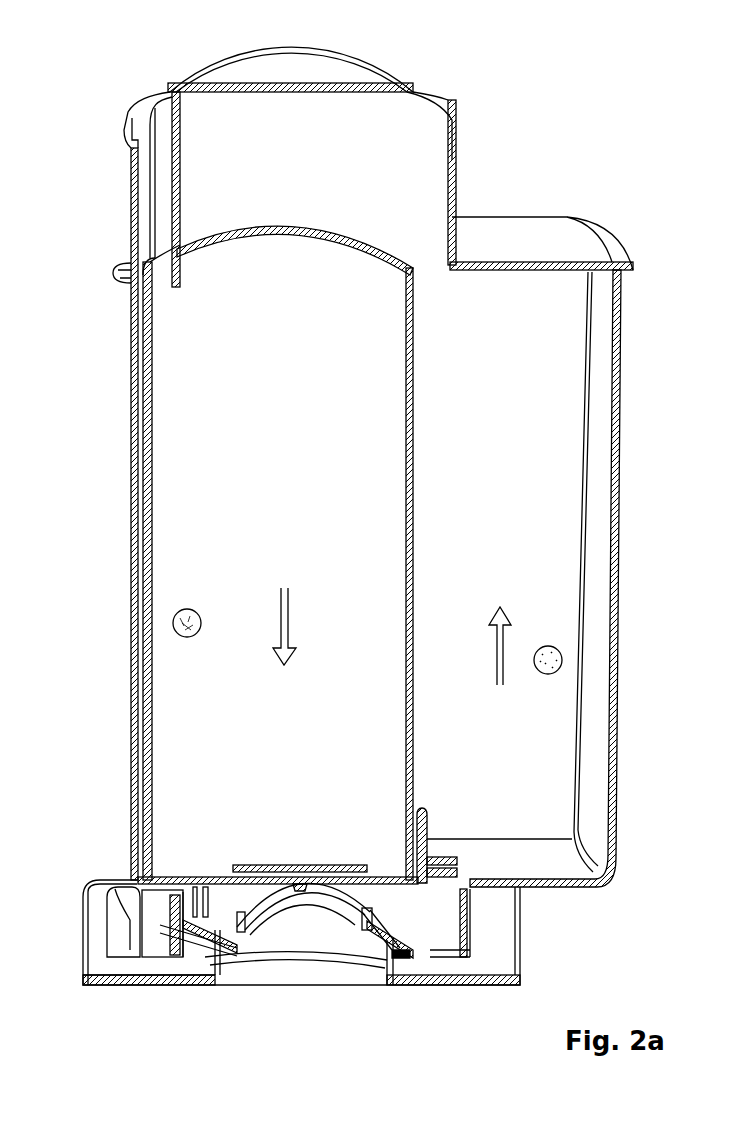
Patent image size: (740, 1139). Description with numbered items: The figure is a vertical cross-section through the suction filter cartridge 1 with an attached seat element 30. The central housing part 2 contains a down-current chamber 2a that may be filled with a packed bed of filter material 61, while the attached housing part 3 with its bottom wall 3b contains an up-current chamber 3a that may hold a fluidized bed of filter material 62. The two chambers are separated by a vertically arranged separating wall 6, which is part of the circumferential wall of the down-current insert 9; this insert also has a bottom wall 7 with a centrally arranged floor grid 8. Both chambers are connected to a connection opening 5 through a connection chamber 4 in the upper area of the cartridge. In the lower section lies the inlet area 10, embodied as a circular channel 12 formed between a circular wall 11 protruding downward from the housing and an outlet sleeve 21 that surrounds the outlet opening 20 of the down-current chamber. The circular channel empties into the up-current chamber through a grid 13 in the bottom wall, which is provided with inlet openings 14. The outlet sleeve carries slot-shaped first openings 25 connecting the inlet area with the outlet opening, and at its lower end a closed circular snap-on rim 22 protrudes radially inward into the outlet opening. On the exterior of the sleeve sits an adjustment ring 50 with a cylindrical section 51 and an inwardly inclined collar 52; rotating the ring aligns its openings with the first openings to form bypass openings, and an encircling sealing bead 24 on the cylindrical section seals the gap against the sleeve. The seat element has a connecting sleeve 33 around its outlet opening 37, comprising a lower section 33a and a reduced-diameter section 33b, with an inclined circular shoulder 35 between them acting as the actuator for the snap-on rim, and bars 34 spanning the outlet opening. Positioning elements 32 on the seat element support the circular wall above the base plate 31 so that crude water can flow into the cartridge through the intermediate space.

The suction filter cartridge 1 is at (622, 206).
The central housing part 2 is at (131, 436).
The down-current chamber 2a is at (298, 517).
The attached housing part 3 is at (622, 431).
The up-current chamber 3a is at (525, 517).
The bottom wall 3b is at (562, 885).
The connection chamber 4 is at (297, 177).
The connection opening 5 is at (420, 258).
The separating wall 6 is at (416, 430).
The bottom wall 7 is at (180, 862).
The floor grid 8 is at (247, 866).
The down-current insert 9 is at (143, 563).
The inlet area 10 is at (433, 984).
The circular wall 11 is at (480, 918).
The circular channel 12 is at (465, 935).
The grid 13 is at (440, 863).
The inlet openings 14 is at (452, 866).
The outlet opening 20 is at (298, 955).
The outlet sleeve 21 is at (432, 822).
The snap-on rim 22 is at (388, 960).
The sealing bead 24 is at (432, 920).
The first openings 25 is at (206, 918).
The seat element 30 is at (76, 950).
The base plate 31 is at (117, 985).
The positioning elements 32 is at (118, 912).
The connecting sleeve 33 is at (231, 980).
The lower section 33a is at (405, 945).
The reduced-diameter section 33b is at (357, 935).
The bars 34 is at (333, 898).
The circular shoulder 35 is at (372, 905).
The outlet opening 37 is at (262, 915).
The adjustment ring 50 is at (168, 955).
The cylindrical section 51 is at (150, 958).
The collar 52 is at (195, 950).
The filter material 61 is at (173, 629).
The filter material 62 is at (562, 659).